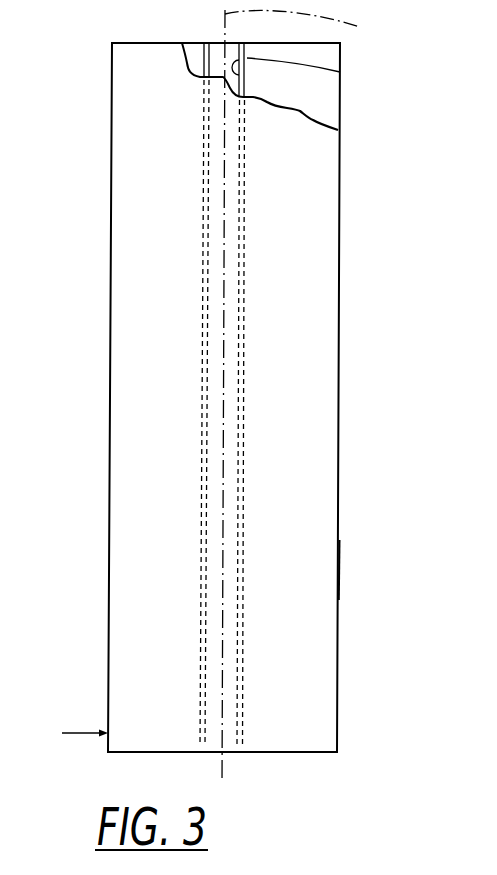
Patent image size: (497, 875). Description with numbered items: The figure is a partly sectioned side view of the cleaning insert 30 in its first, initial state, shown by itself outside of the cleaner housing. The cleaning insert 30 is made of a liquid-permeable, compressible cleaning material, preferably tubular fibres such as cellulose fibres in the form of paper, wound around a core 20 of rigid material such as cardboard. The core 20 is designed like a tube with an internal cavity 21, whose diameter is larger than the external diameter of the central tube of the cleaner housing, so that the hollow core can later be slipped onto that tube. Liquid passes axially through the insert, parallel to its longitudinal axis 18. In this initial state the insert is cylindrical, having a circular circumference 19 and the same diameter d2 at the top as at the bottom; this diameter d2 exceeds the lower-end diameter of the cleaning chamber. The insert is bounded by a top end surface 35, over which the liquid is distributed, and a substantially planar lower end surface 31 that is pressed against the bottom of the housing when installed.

The longitudinal axis 18 is at (360, 27).
The circular circumference 19 is at (338, 610).
The core 20 is at (247, 87).
The internal cavity 21 is at (340, 72).
The cleaning insert 30 is at (343, 569).
The lower end surface 31 is at (303, 752).
The top end surface 35 is at (160, 42).
The diameter of the cleaning insert d2 is at (387, 730).